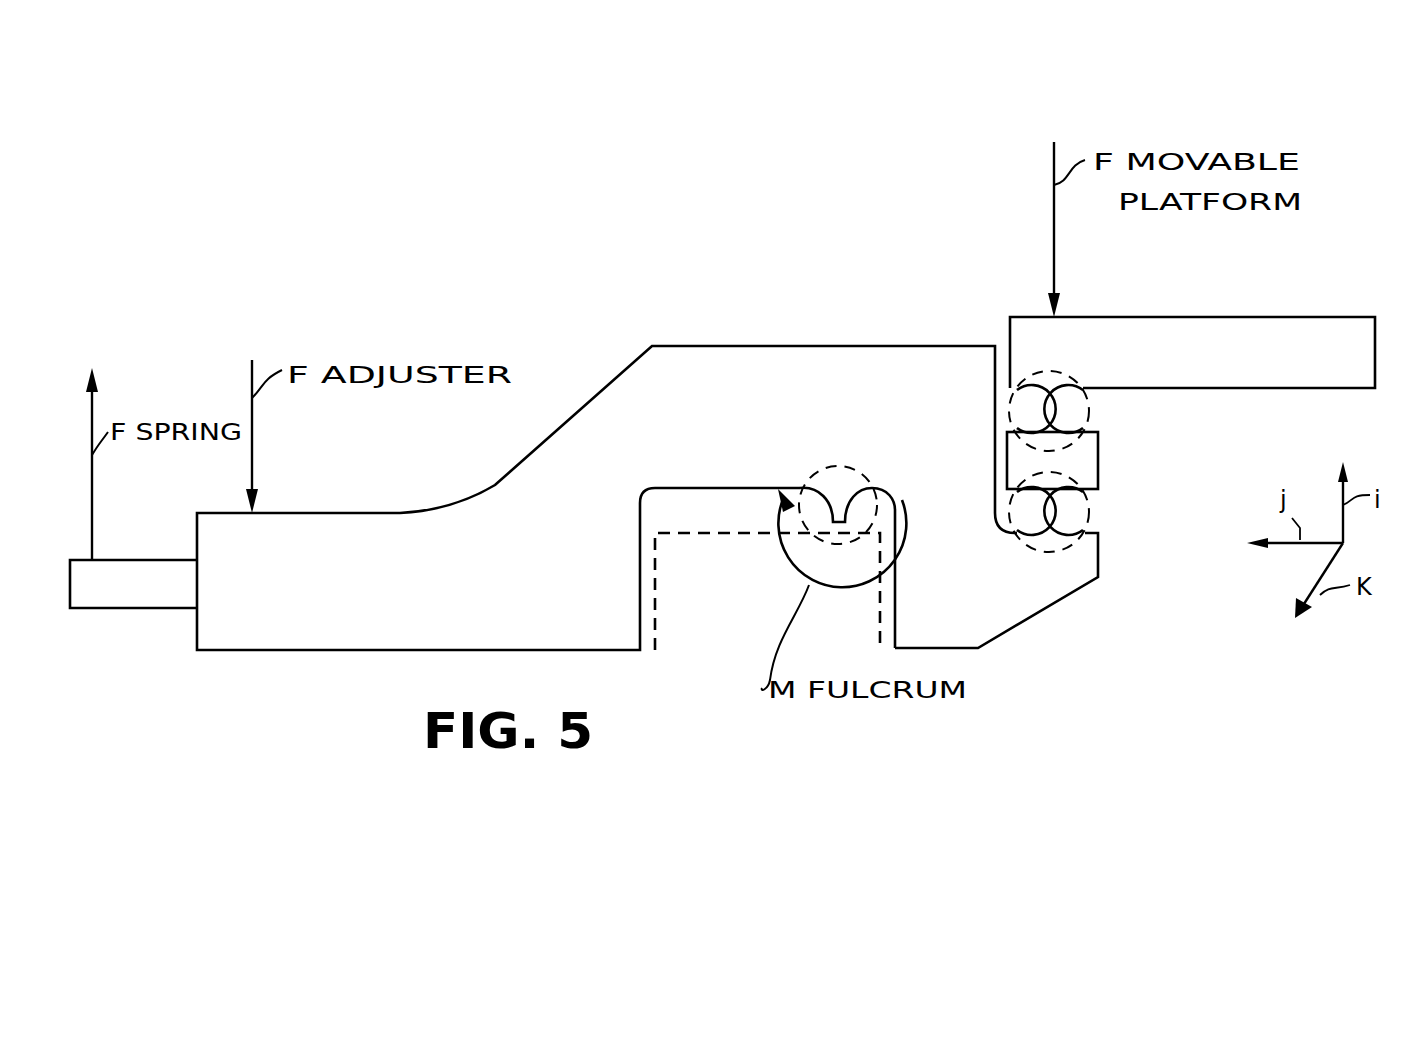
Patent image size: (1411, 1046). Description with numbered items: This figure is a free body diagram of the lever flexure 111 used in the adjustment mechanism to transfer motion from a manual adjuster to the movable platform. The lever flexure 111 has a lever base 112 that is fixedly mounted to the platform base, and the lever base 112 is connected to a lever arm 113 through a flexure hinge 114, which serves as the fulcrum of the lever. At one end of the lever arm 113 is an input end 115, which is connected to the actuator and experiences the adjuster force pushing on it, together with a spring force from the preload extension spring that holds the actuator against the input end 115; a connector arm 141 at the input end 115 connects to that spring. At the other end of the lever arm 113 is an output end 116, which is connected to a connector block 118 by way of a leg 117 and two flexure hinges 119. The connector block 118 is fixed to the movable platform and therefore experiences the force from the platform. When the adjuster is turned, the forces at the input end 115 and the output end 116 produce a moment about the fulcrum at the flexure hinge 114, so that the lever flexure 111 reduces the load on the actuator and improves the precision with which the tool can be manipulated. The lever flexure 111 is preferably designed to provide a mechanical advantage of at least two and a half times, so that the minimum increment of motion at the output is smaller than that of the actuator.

The lever flexure 111 is at (570, 207).
The lever base 112 is at (713, 652).
The lever arm 113 is at (703, 347).
The flexure hinge 114 is at (848, 467).
The input end 115 is at (370, 650).
The output end 116 is at (1035, 612).
The leg 117 is at (1098, 455).
The connector block 118 is at (1270, 317).
The flexure hinges 119 is at (1090, 412).
The connector arm 141 is at (138, 608).